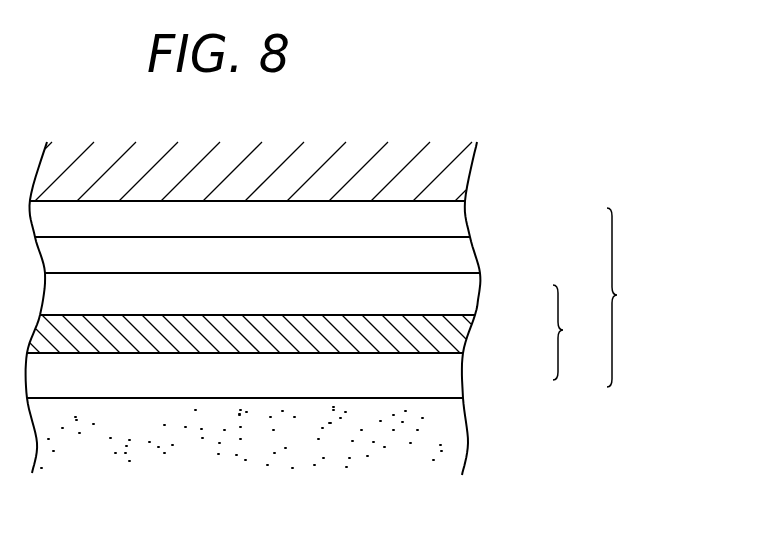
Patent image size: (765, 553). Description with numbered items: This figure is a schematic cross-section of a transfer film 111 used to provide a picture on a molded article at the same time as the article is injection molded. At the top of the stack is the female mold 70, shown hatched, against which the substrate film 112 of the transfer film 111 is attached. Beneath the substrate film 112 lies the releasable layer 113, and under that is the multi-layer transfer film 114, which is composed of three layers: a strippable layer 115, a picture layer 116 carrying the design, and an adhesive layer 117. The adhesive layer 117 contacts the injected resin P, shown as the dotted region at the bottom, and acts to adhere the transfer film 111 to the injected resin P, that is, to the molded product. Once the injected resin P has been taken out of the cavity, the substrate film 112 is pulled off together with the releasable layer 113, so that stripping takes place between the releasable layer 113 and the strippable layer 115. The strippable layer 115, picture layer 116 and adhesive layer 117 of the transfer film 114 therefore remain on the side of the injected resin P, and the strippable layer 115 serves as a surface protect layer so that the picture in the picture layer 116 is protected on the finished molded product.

The female mold 70 is at (460, 178).
The transfer film 111 is at (632, 297).
The substrate film 112 is at (455, 228).
The releasable layer 113 is at (463, 263).
The transfer film 114 is at (576, 332).
The strippable layer 115 is at (470, 297).
The picture layer 116 is at (460, 335).
The adhesive layer 117 is at (450, 382).
The injected resin P is at (450, 427).